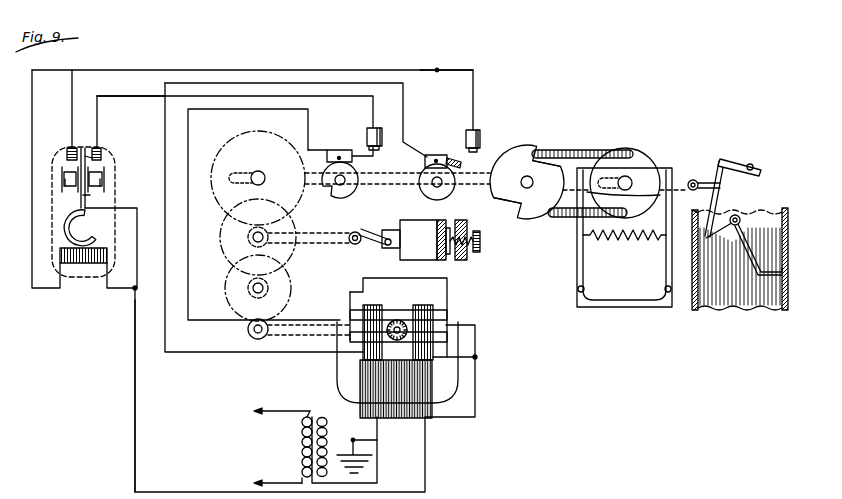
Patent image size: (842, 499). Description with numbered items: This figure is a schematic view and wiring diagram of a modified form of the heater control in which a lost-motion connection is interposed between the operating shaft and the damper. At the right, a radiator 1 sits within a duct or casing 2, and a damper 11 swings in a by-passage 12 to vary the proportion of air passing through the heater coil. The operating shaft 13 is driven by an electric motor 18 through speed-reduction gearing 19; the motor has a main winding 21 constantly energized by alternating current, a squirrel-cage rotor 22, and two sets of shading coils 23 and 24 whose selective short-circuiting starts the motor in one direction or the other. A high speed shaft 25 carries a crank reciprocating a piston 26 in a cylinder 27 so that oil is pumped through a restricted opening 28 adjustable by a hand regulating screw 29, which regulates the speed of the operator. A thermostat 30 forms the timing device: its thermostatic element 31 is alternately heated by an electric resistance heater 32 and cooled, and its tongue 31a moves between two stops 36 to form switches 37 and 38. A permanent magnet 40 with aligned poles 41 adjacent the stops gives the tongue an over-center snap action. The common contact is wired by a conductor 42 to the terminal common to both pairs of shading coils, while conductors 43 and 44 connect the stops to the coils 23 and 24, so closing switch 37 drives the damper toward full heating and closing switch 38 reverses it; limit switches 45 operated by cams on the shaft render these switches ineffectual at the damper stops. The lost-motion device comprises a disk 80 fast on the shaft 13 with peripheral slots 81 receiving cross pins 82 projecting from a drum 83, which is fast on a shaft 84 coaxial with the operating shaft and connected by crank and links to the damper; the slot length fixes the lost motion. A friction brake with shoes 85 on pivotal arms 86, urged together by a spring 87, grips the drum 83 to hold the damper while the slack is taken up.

The radiator 1 is at (767, 211).
The duct or casing 2 is at (693, 308).
The damper 11 is at (757, 214).
The by-passage 12 is at (712, 252).
The operating shaft 13 is at (392, 188).
The electric motor 18 is at (402, 350).
The speed-reduction gearing 19 is at (225, 267).
The main winding 21 is at (388, 412).
The rotor 22 is at (398, 318).
The shading coils 23 is at (352, 353).
The shading coils 24 is at (363, 311).
The high speed shaft 25 is at (312, 243).
The piston 26 is at (392, 229).
The cylinder 27 is at (427, 223).
The restricted opening 28 is at (450, 254).
The hand regulating screw 29 is at (476, 251).
The thermostat 30 is at (120, 147).
The thermostatic element 31 is at (100, 228).
The tongue 31a is at (90, 197).
The electric resistance heater 32 is at (88, 265).
The stops 36 is at (71, 147).
The switch 37 is at (89, 158).
The switch 38 is at (83, 146).
The permanent magnet 40 is at (106, 180).
The poles 41 is at (75, 183).
The conductor 42 is at (136, 423).
The conductor 43 is at (143, 96).
The conductor 44 is at (437, 72).
The limit switches 45 is at (367, 145).
The disk 80 is at (513, 157).
The peripheral slots 81 is at (544, 164).
The cross pins 82 is at (577, 151).
The drum 83 is at (647, 162).
The shaft 84 is at (683, 177).
The shoes 85 is at (623, 201).
The pivotal arms 86 is at (665, 268).
The spring 87 is at (628, 241).